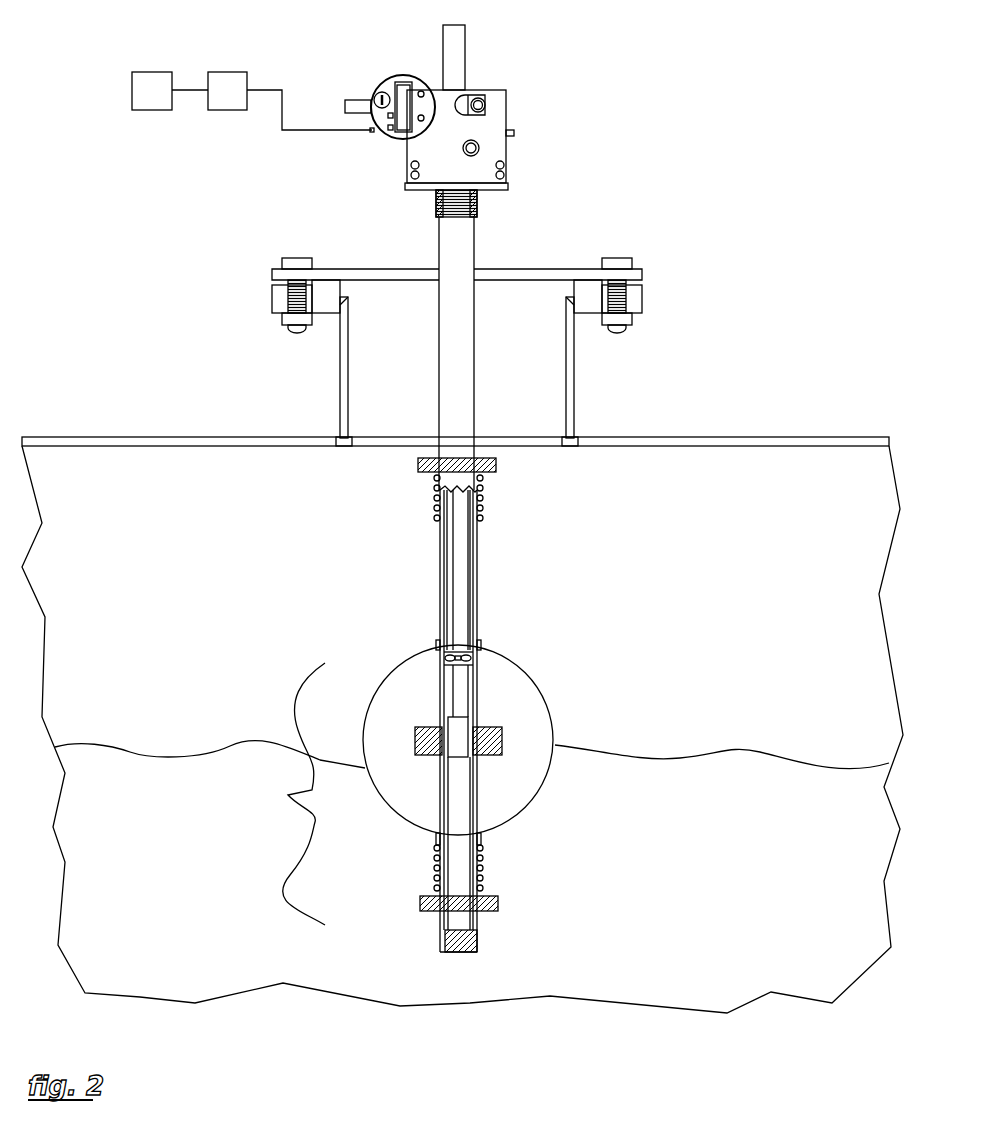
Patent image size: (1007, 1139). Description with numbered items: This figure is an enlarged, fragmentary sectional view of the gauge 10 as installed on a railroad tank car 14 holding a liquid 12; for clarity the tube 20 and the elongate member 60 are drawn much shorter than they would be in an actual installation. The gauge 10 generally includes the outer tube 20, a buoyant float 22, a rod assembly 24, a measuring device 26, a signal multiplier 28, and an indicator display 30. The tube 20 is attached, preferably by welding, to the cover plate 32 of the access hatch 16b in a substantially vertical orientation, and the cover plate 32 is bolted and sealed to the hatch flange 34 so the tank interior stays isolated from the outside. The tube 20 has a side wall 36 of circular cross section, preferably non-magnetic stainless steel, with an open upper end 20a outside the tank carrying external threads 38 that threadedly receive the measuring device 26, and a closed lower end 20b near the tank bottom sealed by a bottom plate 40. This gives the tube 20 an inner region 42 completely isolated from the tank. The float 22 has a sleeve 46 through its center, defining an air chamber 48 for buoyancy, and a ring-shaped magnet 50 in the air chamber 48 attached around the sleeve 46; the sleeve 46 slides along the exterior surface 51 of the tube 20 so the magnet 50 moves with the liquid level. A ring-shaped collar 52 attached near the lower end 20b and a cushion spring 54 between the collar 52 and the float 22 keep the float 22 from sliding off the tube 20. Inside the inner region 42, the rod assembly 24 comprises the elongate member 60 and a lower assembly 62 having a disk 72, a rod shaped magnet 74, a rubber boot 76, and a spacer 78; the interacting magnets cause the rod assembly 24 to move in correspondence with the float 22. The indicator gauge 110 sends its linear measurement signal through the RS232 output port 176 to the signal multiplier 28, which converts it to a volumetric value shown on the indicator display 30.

The gauge 10 is at (573, 147).
The liquid 12 is at (112, 843).
The tank car 14 is at (146, 430).
The access hatch 16b is at (345, 418).
The outer tube 20 is at (482, 404).
The upper end 20a is at (517, 211).
The lower end 20b is at (396, 950).
The float 22 is at (528, 675).
The rod assembly 24 is at (468, 580).
The measuring device 26 is at (505, 113).
The signal multiplier 28 is at (225, 112).
The indicator display 30 is at (140, 110).
The cover plate 32 is at (582, 268).
The hatch flange 34 is at (330, 303).
The side wall 36 is at (460, 345).
The external threads 38 is at (438, 203).
The bottom plate 40 is at (519, 951).
The inner region 42 is at (470, 818).
The sleeve 46 is at (436, 835).
The air chamber 48 is at (525, 782).
The ring-shaped magnet 50 is at (495, 740).
The exterior surface 51 is at (475, 542).
The collar 52 is at (498, 463).
The cushion spring 54 is at (438, 512).
The elongate member 60 is at (466, 48).
The lower assembly 62 is at (472, 794).
The disk 72 is at (450, 658).
The rod shaped magnet 74 is at (460, 690).
The rubber boot 76 is at (462, 725).
The spacer 78 is at (468, 855).
The indicator gauge 110 is at (384, 82).
The RS232 output port 176 is at (382, 130).